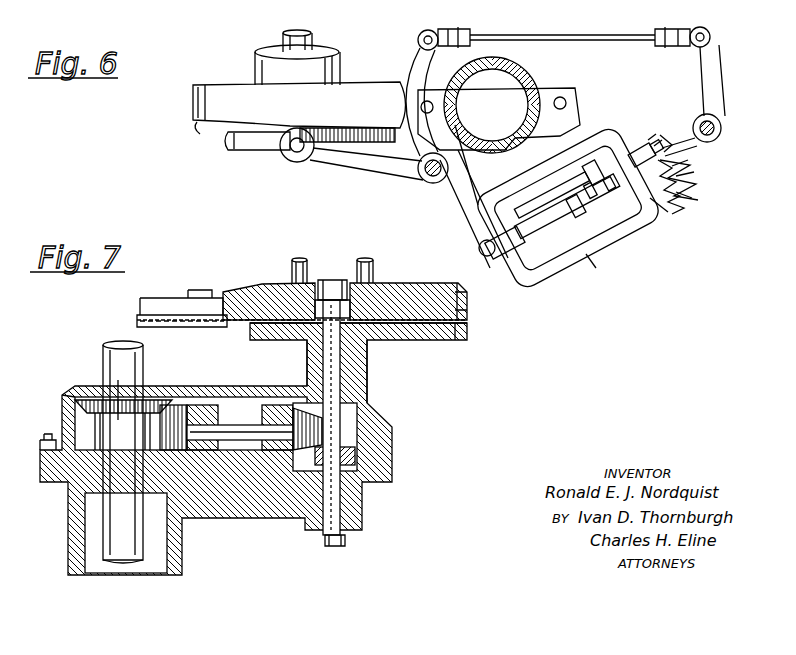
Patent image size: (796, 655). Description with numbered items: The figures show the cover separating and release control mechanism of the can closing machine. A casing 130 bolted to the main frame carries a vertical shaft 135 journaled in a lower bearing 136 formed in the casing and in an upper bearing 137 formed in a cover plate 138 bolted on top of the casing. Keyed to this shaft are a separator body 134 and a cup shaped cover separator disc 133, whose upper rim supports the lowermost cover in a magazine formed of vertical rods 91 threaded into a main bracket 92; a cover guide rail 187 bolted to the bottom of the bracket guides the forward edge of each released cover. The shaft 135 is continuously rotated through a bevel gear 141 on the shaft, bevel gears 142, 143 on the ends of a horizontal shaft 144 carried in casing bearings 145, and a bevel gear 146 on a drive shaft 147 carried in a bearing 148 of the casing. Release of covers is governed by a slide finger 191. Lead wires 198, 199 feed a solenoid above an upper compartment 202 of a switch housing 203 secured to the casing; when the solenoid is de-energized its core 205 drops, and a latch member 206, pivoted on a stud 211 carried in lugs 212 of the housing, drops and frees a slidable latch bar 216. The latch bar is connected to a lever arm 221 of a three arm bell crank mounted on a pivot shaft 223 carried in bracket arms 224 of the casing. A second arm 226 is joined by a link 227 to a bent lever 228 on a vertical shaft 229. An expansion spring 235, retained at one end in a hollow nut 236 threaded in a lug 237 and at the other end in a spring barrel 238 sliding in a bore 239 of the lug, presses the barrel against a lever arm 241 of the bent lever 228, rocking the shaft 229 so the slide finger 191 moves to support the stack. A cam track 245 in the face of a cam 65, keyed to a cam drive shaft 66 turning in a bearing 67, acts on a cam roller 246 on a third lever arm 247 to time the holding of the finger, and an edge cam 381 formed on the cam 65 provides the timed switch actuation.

In FIG. 6, the cam 65 is at (192, 102).
In FIG. 6, the cam drive shaft 66 is at (285, 36).
In FIG. 6, the bearing 67 is at (330, 55).
In FIG. 6, the cam track 245 is at (200, 128).
In FIG. 6, the edge cam 381 is at (240, 149).
In FIG. 6, the cam roller 246 is at (288, 160).
In FIG. 6, the third lever arm 247 is at (345, 160).
In FIG. 6, the pivot shaft 223 is at (421, 180).
In FIG. 6, the second arm 226 is at (408, 78).
In FIG. 6, the link 227 is at (562, 25).
In FIG. 6, the bent lever 228 is at (722, 85).
In FIG. 6, the vertical shaft 229 is at (722, 122).
In FIG. 6, the spring barrel 238 is at (686, 152).
In FIG. 6, the casing 130 is at (535, 87).
In FIG. 7, the casing 130 is at (252, 504).
In FIG. 6, the bracket arms 224 is at (452, 148).
In FIG. 6, the lever arm 221 is at (462, 226).
In FIG. 6, the switch housing 203 is at (630, 258).
In FIG. 6, the upper compartment 202 is at (598, 270).
In FIG. 6, the latch member 206 is at (575, 220).
In FIG. 6, the core 205 is at (548, 200).
In FIG. 6, the lugs 212 is at (592, 198).
In FIG. 6, the stud 211 is at (612, 207).
In FIG. 6, the latch bar 216 is at (540, 240).
In FIG. 6, the expansion spring 235 is at (728, 194).
In FIG. 6, the bore 239 is at (726, 172).
In FIG. 6, the hollow nut 236 is at (722, 211).
In FIG. 6, the lug 237 is at (660, 210).
In FIG. 6, the lever arm 241 is at (676, 142).
In FIG. 6, the lead wire 198 is at (650, 148).
In FIG. 6, the lead wire 199 is at (652, 156).
In FIG. 7, the upper bearing 137 is at (340, 335).
In FIG. 7, the separator body 134 is at (312, 344).
In FIG. 7, the cover plate 138 is at (372, 392).
In FIG. 7, the casing bearings 145 is at (272, 412).
In FIG. 7, the bearing 148 is at (95, 470).
In FIG. 7, the drive shaft 147 is at (104, 352).
In FIG. 7, the bevel gear 146 is at (104, 405).
In FIG. 7, the bevel gear 143 is at (182, 408).
In FIG. 7, the horizontal shaft 144 is at (234, 430).
In FIG. 7, the bevel gear 142 is at (312, 424).
In FIG. 7, the bevel gear 141 is at (350, 457).
In FIG. 7, the vertical shaft 135 is at (342, 378).
In FIG. 7, the lower bearing 136 is at (355, 510).
In FIG. 7, the cover separator disc 133 is at (356, 302).
In FIG. 7, the vertical rods 91 is at (300, 255).
In FIG. 7, the slide finger 191 is at (333, 280).
In FIG. 7, the main bracket 92 is at (462, 290).
In FIG. 7, the cover guide rail 187 is at (170, 318).